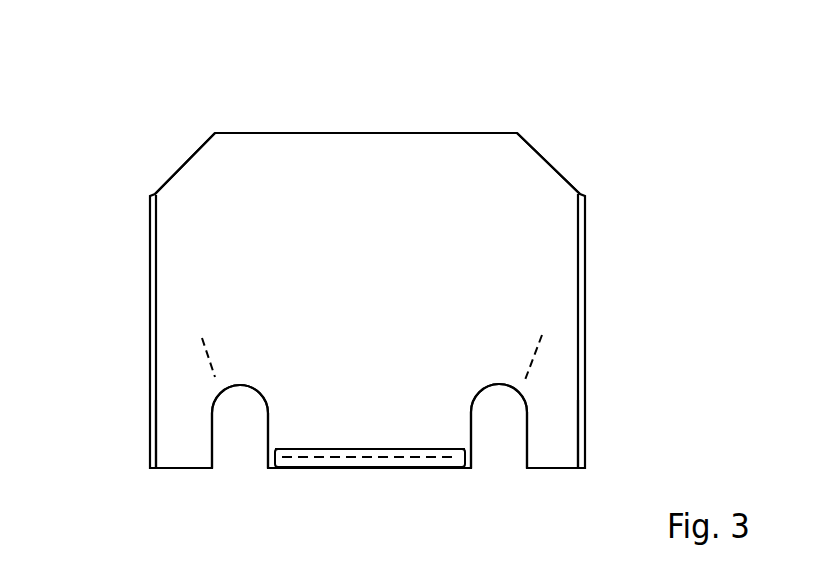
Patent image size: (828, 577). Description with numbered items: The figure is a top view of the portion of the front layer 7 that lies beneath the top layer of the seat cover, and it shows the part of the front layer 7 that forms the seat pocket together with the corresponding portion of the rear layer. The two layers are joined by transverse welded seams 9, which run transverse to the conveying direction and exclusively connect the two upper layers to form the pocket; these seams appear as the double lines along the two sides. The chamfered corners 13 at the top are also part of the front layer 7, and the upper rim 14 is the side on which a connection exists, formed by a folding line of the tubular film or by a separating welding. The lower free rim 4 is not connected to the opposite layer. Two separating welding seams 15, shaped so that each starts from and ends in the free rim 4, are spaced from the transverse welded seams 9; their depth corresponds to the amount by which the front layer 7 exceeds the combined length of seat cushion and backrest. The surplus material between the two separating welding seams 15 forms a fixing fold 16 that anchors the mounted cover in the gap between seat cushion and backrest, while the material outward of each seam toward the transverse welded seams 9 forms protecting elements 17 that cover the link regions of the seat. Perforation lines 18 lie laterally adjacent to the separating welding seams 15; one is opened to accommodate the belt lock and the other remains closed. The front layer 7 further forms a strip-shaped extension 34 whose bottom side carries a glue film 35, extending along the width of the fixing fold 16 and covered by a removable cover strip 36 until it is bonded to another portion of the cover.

The front layer 7 is at (431, 207).
The rim 14 is at (348, 133).
The chamfered corners 13 is at (180, 165).
The transverse welded seams 9 is at (155, 258).
The perforation lines 18 is at (202, 342).
The protecting elements 17 is at (185, 415).
The separating welding seams 15 is at (216, 449).
The free rim 4 is at (177, 469).
The strip-shaped extension 34 is at (435, 418).
The removable cover strip 36 is at (312, 458).
The glue film 35 is at (288, 458).
The fixing fold 16 is at (390, 425).